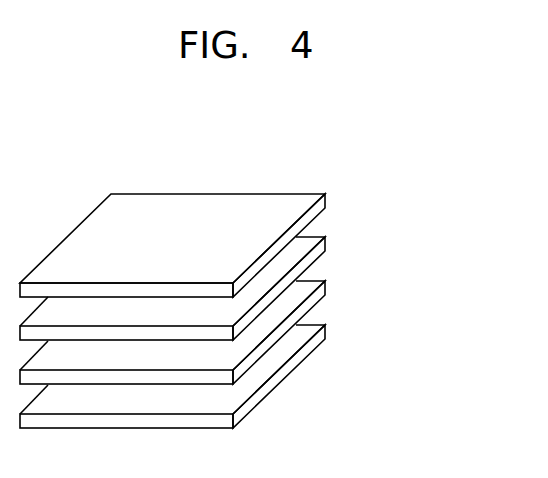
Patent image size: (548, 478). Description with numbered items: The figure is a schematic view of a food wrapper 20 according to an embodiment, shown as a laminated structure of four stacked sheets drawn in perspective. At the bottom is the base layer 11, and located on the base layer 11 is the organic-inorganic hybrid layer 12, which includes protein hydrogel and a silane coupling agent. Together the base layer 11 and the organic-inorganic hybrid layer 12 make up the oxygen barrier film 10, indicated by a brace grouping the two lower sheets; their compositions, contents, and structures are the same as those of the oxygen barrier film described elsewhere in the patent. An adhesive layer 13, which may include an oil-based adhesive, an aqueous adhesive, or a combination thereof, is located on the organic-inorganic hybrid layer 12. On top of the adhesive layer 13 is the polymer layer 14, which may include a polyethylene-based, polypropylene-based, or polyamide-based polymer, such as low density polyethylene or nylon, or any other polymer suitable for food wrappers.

The food wrapper 20 is at (430, 209).
The polymer layer 14 is at (313, 222).
The adhesive layer 13 is at (313, 266).
The organic-inorganic hybrid layer 12 is at (309, 307).
The base layer 11 is at (309, 351).
The oxygen barrier film 10 is at (413, 298).